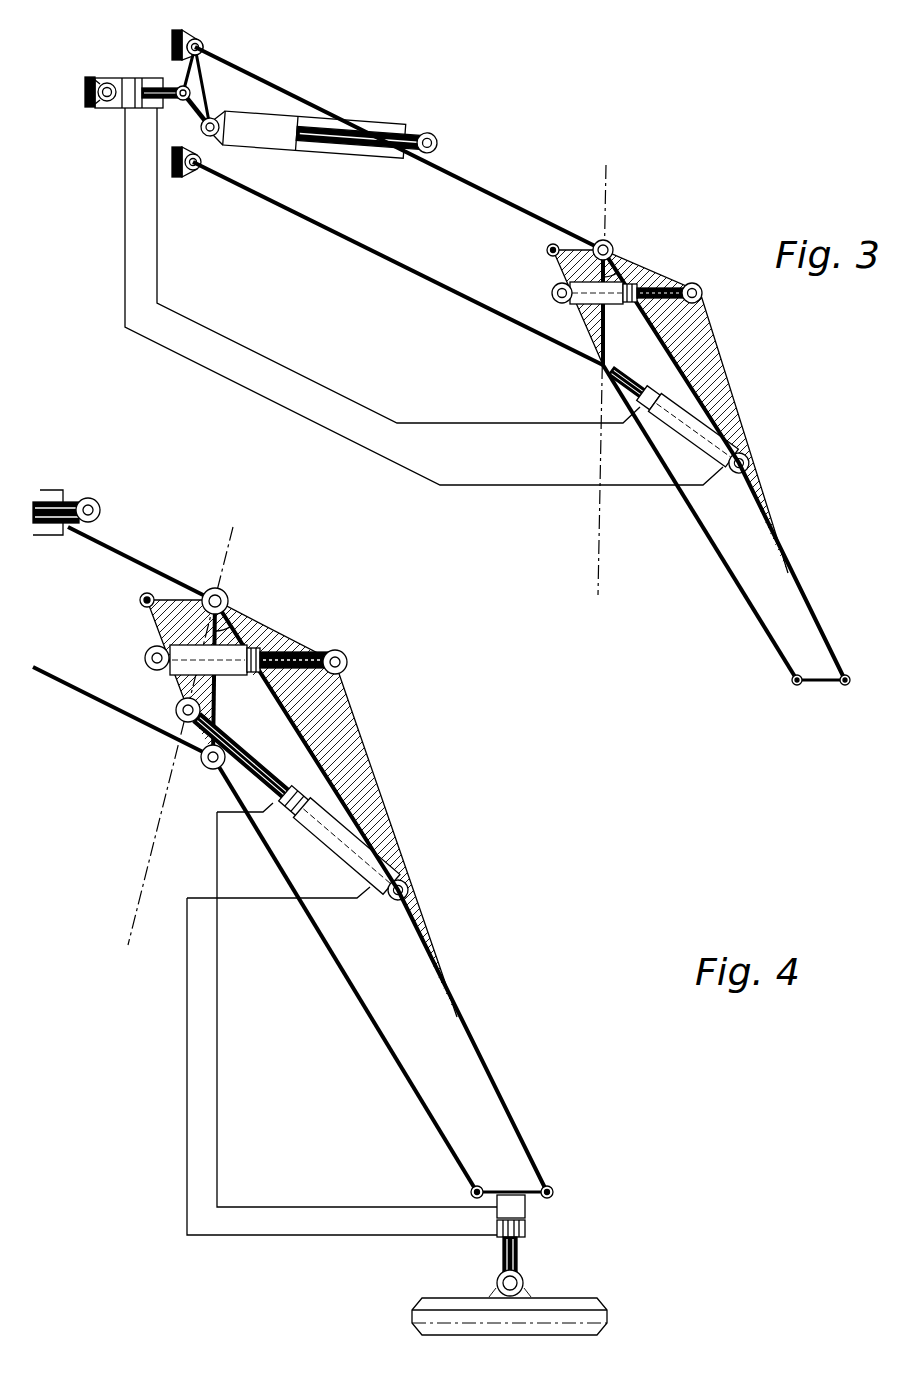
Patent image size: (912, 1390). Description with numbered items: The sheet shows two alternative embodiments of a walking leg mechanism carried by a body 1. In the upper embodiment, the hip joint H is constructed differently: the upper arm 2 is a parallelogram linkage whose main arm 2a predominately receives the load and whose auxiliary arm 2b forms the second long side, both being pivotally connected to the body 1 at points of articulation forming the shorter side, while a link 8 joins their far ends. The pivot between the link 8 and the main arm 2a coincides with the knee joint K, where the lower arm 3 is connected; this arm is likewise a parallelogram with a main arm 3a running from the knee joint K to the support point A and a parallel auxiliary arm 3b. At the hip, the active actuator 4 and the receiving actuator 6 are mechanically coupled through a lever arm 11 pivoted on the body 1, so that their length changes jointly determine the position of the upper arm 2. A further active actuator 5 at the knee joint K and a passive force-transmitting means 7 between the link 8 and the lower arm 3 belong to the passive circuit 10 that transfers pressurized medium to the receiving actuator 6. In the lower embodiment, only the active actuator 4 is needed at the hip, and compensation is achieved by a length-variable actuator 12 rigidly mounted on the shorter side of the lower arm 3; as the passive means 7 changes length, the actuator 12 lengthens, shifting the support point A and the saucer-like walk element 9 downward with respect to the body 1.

In FIG. 3, the body 1 is at (173, 43).
In FIG. 3, the upper arm 2 is at (398, 206).
In FIG. 4, the upper arm 2 is at (124, 653).
In FIG. 3, the main arm 2a is at (443, 170).
In FIG. 4, the main arm 2a is at (148, 565).
In FIG. 3, the auxiliary arm 2b is at (303, 225).
In FIG. 4, the auxiliary arm 2b is at (133, 718).
In FIG. 3, the lower arm 3 is at (736, 467).
In FIG. 4, the lower arm 3 is at (393, 899).
In FIG. 3, the main arm 3a is at (803, 602).
In FIG. 4, the main arm 3a is at (480, 1068).
In FIG. 3, the auxiliary arm 3b is at (752, 605).
In FIG. 4, the auxiliary arm 3b is at (432, 1117).
In FIG. 3, the active length-variable actuator 4 is at (275, 117).
In FIG. 4, the active length-variable actuator 4 is at (53, 490).
In FIG. 3, the active length-variable actuator 5 is at (642, 277).
In FIG. 4, the active length-variable actuator 5 is at (267, 645).
In FIG. 3, the receiving actuator 6 is at (132, 77).
In FIG. 3, the passive force-transmitting means 7 is at (685, 437).
In FIG. 4, the passive force-transmitting means 7 is at (340, 832).
In FIG. 3, the link 8 is at (618, 323).
In FIG. 4, the link 8 is at (178, 613).
In FIG. 4, the walk element 9 is at (602, 1305).
In FIG. 3, the passive circuit 10 is at (462, 432).
In FIG. 4, the passive circuit 10 is at (206, 1052).
In FIG. 3, the lever arm 11 is at (203, 80).
In FIG. 4, the length-variable actuator 12 is at (527, 1212).
In FIG. 3, the hip joint H is at (199, 42).
In FIG. 3, the knee joint K is at (612, 238).
In FIG. 4, the knee joint K is at (232, 593).
In FIG. 3, the support point A is at (850, 673).
In FIG. 4, the support point A is at (497, 1280).